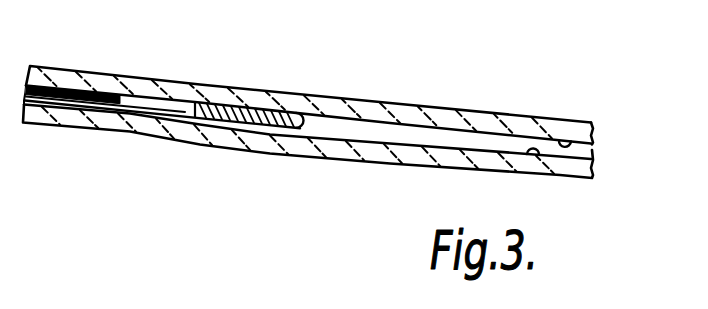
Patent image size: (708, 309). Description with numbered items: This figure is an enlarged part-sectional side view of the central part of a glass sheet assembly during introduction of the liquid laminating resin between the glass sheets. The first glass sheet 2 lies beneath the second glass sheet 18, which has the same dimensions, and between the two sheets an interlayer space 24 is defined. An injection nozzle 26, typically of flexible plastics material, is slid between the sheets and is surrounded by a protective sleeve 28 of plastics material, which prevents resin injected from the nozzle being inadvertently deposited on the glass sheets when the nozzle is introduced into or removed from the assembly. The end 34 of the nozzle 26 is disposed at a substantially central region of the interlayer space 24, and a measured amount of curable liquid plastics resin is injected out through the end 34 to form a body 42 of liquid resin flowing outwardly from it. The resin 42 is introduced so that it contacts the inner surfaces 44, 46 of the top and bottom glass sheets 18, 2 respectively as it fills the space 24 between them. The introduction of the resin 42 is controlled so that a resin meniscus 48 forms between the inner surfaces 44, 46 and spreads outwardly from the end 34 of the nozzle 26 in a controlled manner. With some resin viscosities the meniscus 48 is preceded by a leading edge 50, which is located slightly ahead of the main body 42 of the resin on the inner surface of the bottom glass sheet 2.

The first glass sheet 2 is at (427, 157).
The second glass sheet 18 is at (438, 117).
The interlayer space 24 is at (504, 148).
The injection nozzle 26 is at (150, 100).
The protective sleeve 28 is at (57, 86).
The end of the nozzle 34 is at (187, 109).
The body of liquid resin 42 is at (262, 113).
The inner surface of the top glass sheet 44 is at (528, 160).
The inner surface of the bottom glass sheet 46 is at (568, 139).
The resin meniscus 48 is at (302, 113).
The leading edge 50 is at (322, 128).